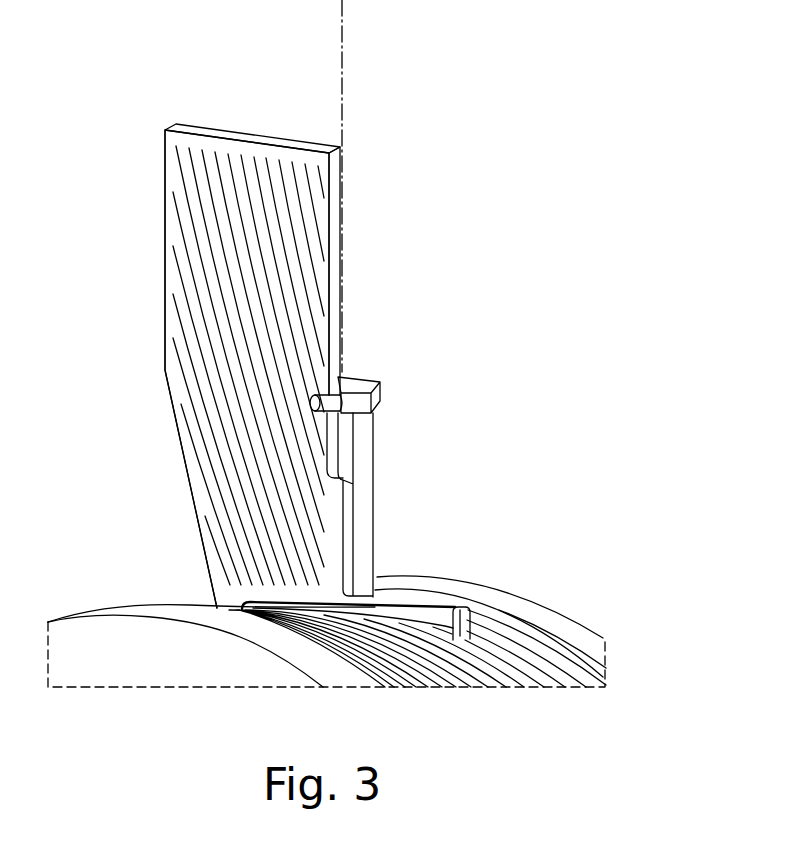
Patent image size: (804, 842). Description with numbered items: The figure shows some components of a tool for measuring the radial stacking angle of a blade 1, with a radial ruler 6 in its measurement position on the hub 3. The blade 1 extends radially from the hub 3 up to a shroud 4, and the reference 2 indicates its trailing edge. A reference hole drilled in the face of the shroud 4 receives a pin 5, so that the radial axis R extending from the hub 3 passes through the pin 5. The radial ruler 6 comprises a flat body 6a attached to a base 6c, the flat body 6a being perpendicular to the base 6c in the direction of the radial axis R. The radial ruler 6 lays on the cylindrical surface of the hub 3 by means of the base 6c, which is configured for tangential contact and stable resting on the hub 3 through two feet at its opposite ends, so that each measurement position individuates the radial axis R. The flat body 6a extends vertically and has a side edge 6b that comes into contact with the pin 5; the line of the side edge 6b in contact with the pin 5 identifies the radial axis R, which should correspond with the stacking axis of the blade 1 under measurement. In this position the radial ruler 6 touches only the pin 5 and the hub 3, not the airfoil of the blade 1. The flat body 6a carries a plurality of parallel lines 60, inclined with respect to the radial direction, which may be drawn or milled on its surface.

The blade 1 is at (423, 455).
The trailing edge 2 is at (380, 530).
The hub 3 is at (583, 606).
The shroud 4 is at (377, 393).
The pin 5 is at (332, 402).
The radial ruler 6 is at (301, 325).
The parallel lines 60 is at (221, 150).
The flat body 6a is at (279, 188).
The side edge 6b is at (338, 251).
The base 6c is at (443, 621).
The radial axis R is at (340, 88).